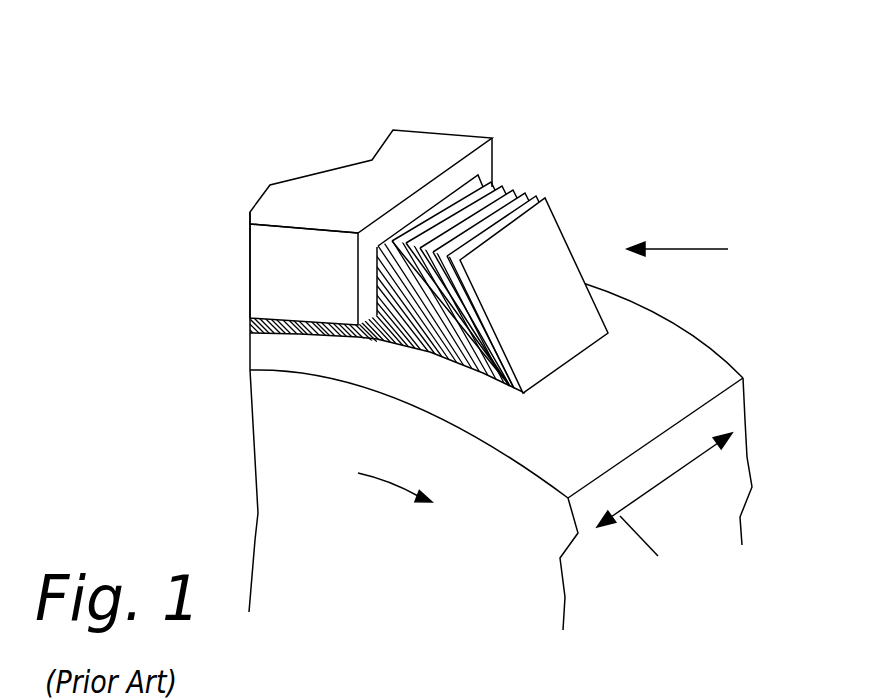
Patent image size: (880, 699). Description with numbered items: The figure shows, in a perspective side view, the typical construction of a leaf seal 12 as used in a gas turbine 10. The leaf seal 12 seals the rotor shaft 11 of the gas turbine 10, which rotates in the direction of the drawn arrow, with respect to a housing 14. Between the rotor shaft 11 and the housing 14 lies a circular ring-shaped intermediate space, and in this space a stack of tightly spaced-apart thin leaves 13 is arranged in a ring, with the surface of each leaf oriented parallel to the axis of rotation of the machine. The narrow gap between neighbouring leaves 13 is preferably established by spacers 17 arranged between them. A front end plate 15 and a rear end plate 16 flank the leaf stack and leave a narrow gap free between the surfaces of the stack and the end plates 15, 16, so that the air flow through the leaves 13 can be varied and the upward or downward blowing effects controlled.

The gas turbine 10 is at (681, 202).
The rotor shaft 11 is at (504, 560).
The leaf seal 12 is at (711, 247).
The leaves 13 is at (540, 243).
The housing 14 is at (320, 187).
The front end plate 15 is at (265, 287).
The rear end plate 16 is at (493, 165).
The spacers 17 is at (321, 677).